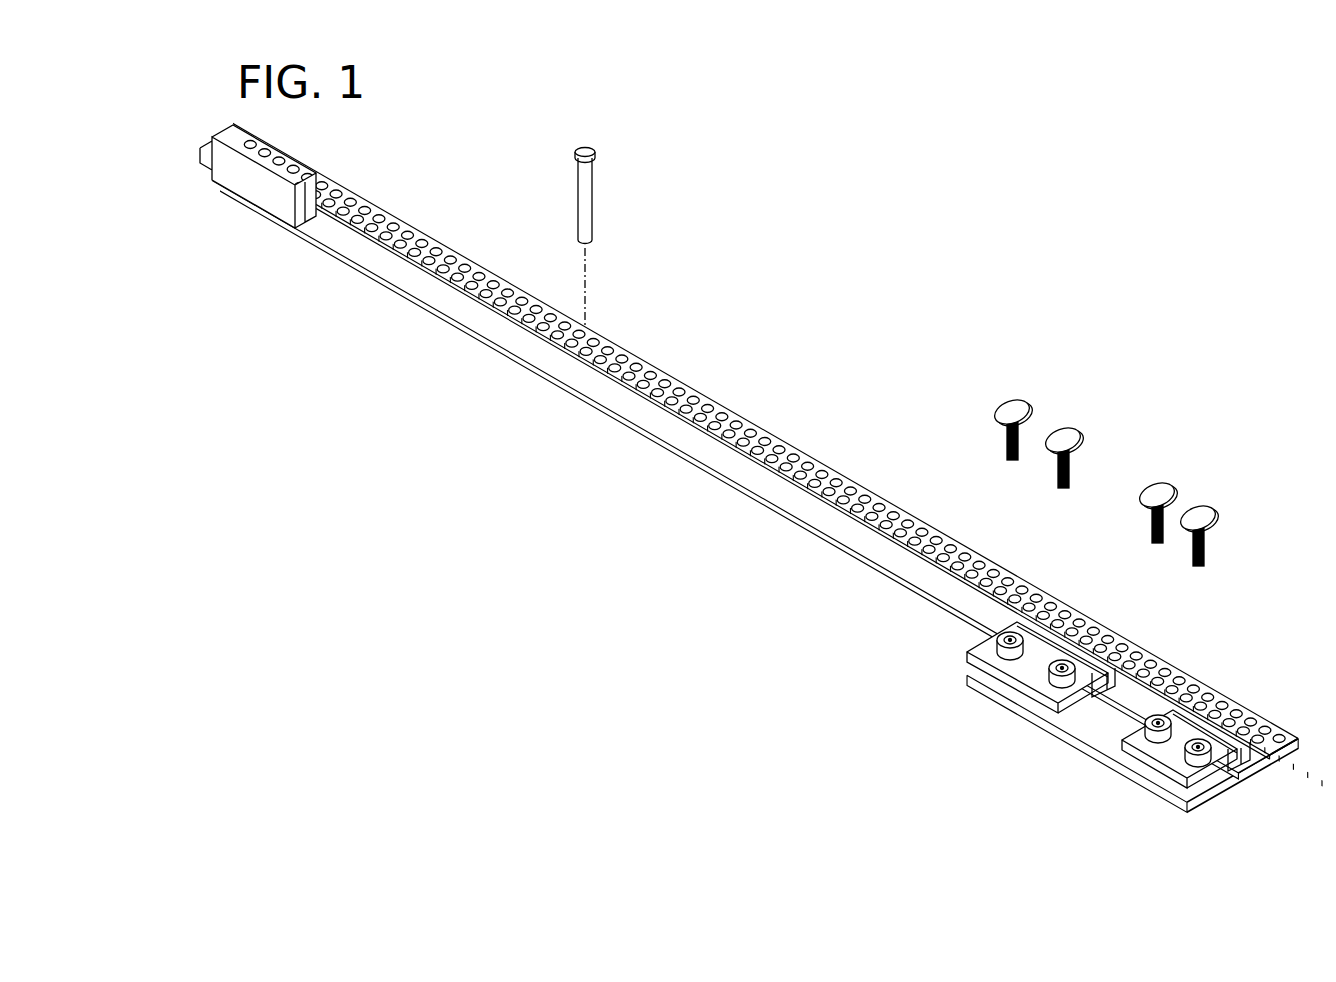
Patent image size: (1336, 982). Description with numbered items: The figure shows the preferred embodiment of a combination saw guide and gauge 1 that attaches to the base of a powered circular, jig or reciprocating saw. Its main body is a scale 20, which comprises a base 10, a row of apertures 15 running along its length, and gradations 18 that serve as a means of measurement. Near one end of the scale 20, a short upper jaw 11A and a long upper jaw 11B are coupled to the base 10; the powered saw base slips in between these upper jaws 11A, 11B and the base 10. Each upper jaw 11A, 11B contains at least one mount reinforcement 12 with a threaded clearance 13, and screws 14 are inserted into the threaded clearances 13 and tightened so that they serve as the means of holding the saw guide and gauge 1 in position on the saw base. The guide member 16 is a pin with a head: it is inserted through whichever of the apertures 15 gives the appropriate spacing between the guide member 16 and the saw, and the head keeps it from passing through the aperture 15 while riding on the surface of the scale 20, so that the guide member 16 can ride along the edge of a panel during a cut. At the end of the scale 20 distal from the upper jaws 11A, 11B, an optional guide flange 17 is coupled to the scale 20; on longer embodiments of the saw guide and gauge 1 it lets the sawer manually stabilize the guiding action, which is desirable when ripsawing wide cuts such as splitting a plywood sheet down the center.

The combination saw guide and gauge 1 is at (767, 470).
The base 10 is at (1062, 736).
The short upper jaw 11A is at (1157, 772).
The long upper jaw 11B is at (962, 652).
The mount reinforcement 12 is at (998, 636).
The threaded clearance 13 is at (998, 648).
The screws 14 is at (1021, 399).
The apertures 15 is at (783, 459).
The guide member 16 is at (592, 198).
The guide flange 17 is at (235, 195).
The gradations 18 is at (765, 431).
The scale 20 is at (665, 443).